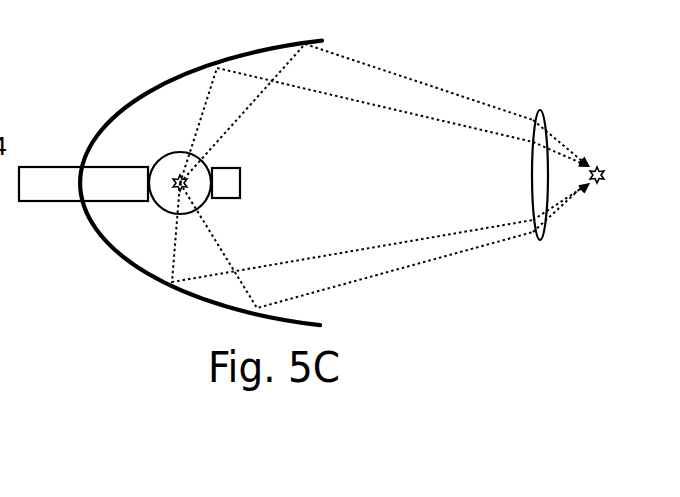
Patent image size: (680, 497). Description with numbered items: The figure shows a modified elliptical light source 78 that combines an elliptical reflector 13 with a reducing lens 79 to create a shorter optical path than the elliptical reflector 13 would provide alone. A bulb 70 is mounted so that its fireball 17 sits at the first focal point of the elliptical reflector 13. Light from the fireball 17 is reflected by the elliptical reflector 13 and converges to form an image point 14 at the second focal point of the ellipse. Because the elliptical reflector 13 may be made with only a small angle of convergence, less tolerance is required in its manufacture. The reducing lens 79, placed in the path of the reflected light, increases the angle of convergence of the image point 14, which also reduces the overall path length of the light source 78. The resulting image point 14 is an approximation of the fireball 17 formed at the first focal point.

The elliptical reflector 13 is at (222, 62).
The fireball 17 is at (177, 177).
The bulb 70 is at (33, 166).
The modified elliptical light source 78 is at (100, 270).
The reducing lens 79 is at (543, 112).
The image point 14 is at (594, 163).